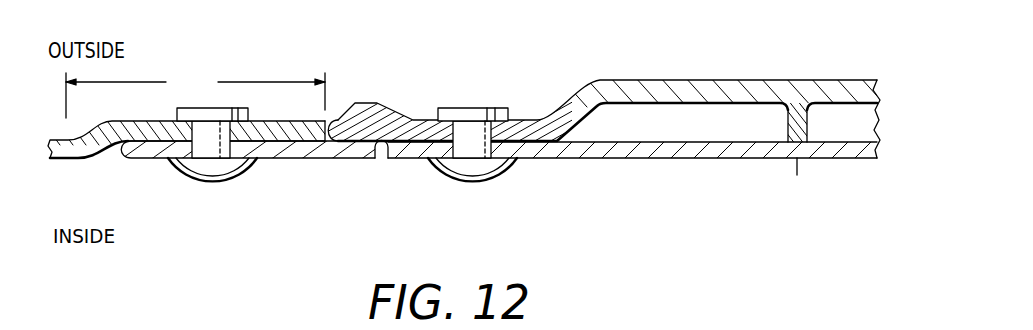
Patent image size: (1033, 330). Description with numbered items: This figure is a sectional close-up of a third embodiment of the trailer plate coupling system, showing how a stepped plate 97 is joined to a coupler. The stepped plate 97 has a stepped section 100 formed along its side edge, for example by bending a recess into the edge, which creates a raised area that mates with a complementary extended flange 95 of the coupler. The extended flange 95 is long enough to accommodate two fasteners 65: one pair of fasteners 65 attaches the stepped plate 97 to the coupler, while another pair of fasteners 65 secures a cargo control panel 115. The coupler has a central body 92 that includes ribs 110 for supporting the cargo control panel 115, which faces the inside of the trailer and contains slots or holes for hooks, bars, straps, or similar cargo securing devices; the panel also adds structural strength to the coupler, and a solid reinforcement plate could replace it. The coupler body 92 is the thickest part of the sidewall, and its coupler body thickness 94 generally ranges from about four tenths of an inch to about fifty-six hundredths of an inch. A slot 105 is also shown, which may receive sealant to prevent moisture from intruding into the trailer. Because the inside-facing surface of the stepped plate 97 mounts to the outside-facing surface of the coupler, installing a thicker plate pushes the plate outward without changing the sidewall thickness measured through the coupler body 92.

The fastener 65 is at (211, 183).
The central body 92 is at (701, 80).
The coupler body thickness 94 is at (797, 80).
The extended flange 95 is at (266, 158).
The stepped plate 97 is at (62, 160).
The stepped section 100 is at (195, 94).
The slot 105 is at (333, 104).
The rib 110 is at (787, 125).
The cargo control panel 115 is at (666, 147).